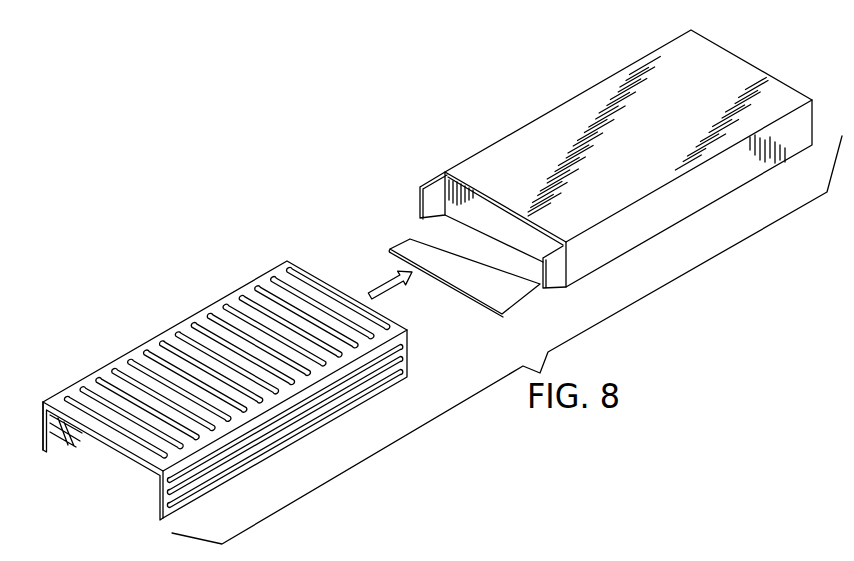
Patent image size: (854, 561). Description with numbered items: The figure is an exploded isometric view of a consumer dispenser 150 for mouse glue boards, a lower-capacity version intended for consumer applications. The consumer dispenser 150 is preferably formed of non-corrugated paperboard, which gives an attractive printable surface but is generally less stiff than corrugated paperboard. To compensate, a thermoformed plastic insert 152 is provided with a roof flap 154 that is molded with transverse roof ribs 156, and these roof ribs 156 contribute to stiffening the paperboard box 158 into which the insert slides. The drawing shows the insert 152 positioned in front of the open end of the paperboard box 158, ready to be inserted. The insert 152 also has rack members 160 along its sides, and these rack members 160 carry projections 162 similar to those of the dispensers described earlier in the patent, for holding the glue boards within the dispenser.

The consumer dispenser 150 is at (376, 150).
The thermoformed plastic insert 152 is at (215, 403).
The roof flap 154 is at (138, 456).
The transverse roof ribs 156 is at (96, 373).
The paperboard box 158 is at (665, 215).
The rack members 160 is at (43, 452).
The projections 162 is at (70, 420).